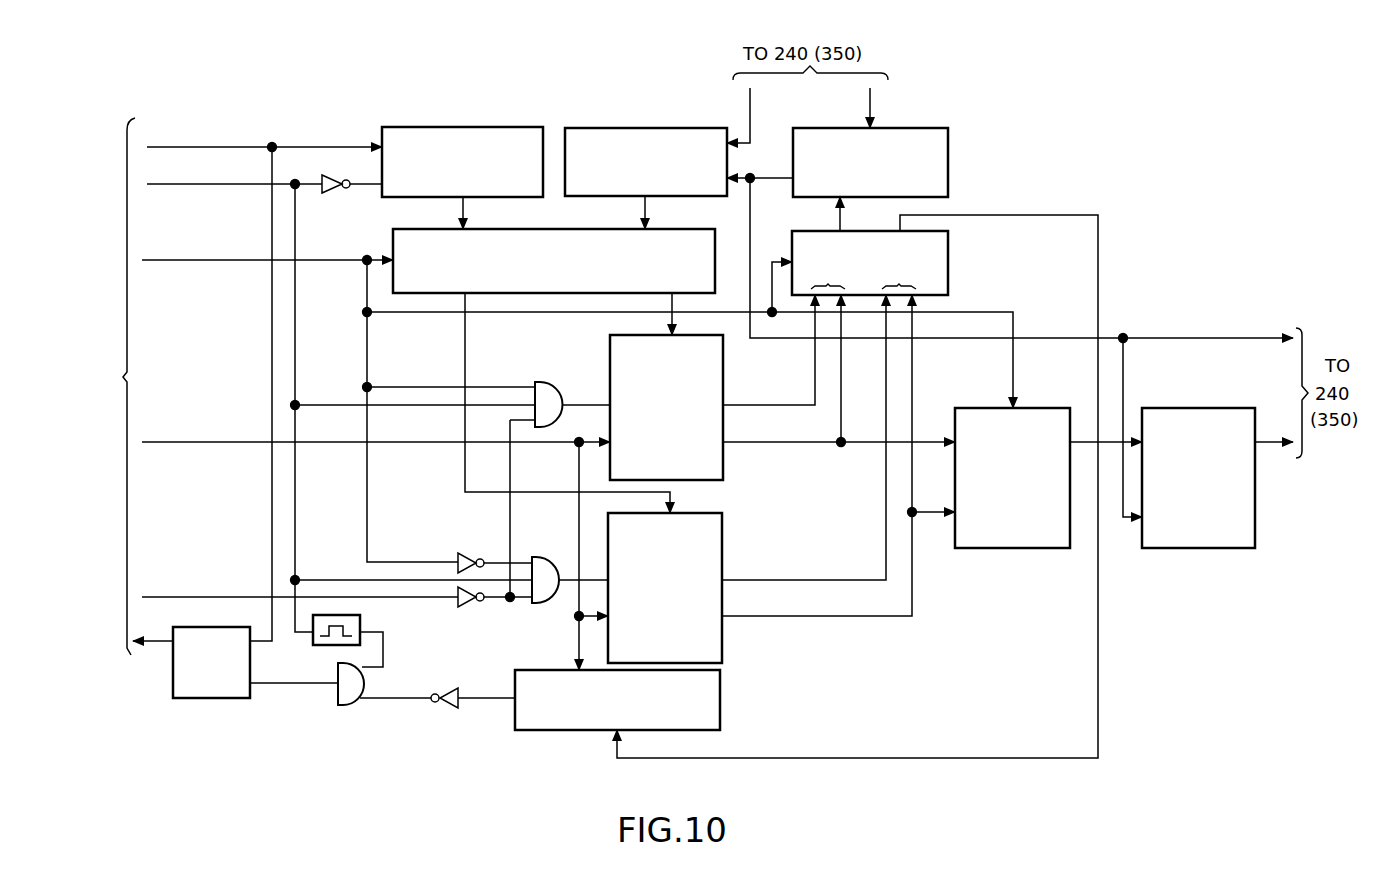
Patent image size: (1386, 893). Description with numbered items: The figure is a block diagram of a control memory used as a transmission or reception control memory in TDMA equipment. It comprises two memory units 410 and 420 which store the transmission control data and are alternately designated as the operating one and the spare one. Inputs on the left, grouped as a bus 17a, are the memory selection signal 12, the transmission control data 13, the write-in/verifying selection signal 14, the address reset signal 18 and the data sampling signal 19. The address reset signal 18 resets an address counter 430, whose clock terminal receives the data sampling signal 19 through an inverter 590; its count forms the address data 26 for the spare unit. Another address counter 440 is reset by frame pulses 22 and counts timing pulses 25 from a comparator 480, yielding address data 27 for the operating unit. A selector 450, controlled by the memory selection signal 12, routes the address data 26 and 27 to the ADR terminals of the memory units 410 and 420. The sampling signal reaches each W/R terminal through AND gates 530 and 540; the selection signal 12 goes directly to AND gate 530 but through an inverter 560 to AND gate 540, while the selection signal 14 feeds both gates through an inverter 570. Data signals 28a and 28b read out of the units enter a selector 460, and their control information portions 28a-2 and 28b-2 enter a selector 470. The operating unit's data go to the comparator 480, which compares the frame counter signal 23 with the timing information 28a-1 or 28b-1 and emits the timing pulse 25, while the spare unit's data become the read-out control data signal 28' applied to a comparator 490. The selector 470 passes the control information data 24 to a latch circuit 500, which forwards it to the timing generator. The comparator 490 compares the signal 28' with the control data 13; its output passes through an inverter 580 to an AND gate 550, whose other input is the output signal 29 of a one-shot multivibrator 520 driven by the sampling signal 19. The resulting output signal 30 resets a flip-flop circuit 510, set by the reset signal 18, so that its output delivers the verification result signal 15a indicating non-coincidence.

The memory selection signal 12 is at (192, 262).
The transmission control data 13 is at (207, 443).
The write-in/verifying selection signal 14 is at (217, 597).
The verification result signal 15a is at (158, 648).
The input bus 17a is at (101, 386).
The address reset signal 18 is at (181, 147).
The data sampling signal 19 is at (193, 184).
The frame pulses 22 is at (750, 101).
The frame counter signal 23 is at (870, 101).
The read-out control information data 24 is at (1080, 446).
The timing pulse 25 is at (1210, 338).
The address data 26 is at (463, 207).
The address data 27 is at (645, 207).
The read-out control data signal 28' is at (857, 510).
The data signal 28a is at (748, 400).
The timing information signal 28a-1 is at (771, 405).
The control information data signal 28a-2 is at (807, 446).
The data signal 28b is at (748, 573).
The timing information signal 28b-1 is at (808, 580).
The control information data signal 28b-2 is at (847, 618).
The output signal of one-shot multivibrator 29 is at (383, 645).
The output signal 30 is at (273, 688).
The memory unit 410 is at (723, 380).
The memory unit 420 is at (722, 548).
The address counter 430 is at (488, 127).
The address counter 440 is at (645, 128).
The selector 450 is at (553, 229).
The selector 460 is at (948, 262).
The selector 470 is at (1050, 394).
The comparator 480 is at (943, 128).
The comparator 490 is at (722, 700).
The latch circuit 500 is at (1210, 408).
The flip-flop circuit 510 is at (200, 698).
The one-shot multivibrator 520 is at (360, 617).
The AND gate 530 is at (545, 392).
The AND gate 540 is at (541, 557).
The AND gate 550 is at (342, 706).
The inverter 560 is at (461, 553).
The inverter 570 is at (466, 607).
The inverter 580 is at (451, 710).
The inverter 590 is at (334, 193).